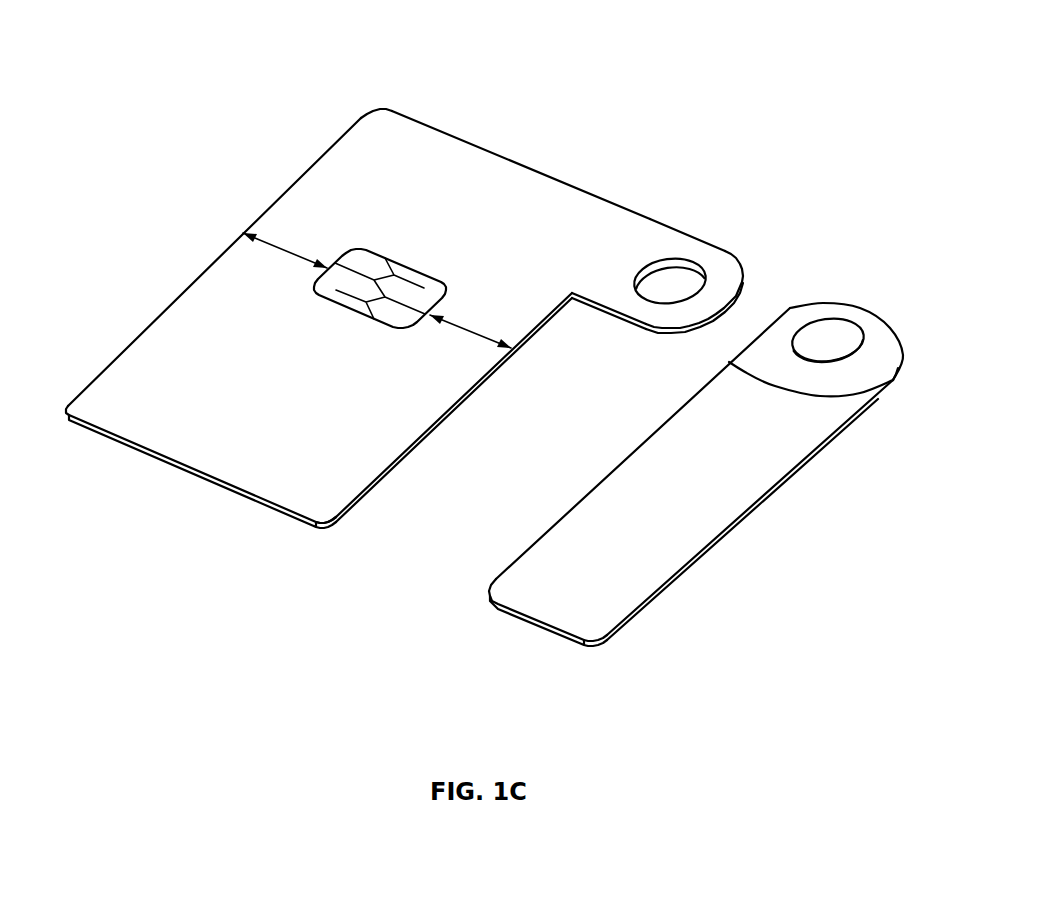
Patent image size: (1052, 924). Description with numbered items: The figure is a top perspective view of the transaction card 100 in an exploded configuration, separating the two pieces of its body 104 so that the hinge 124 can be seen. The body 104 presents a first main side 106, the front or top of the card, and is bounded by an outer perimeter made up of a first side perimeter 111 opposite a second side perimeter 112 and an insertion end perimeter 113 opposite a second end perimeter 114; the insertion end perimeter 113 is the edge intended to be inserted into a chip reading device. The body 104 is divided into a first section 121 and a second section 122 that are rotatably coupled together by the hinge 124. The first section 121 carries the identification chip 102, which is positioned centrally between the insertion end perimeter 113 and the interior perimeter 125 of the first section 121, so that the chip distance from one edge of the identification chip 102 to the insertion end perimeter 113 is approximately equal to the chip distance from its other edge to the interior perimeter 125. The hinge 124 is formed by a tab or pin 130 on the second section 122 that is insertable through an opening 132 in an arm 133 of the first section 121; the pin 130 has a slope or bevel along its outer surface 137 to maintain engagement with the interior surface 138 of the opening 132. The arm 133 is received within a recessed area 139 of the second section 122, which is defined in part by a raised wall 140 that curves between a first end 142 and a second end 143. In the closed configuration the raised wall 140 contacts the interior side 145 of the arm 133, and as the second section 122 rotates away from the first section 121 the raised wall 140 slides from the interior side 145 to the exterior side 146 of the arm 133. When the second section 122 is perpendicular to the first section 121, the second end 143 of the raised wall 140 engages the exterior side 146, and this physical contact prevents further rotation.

The transaction card 100 is at (808, 43).
The identification chip 102 is at (382, 270).
The body 104 is at (558, 686).
The first main side 106 is at (394, 113).
The first side perimeter 111 is at (527, 165).
The second side perimeter 112 is at (193, 478).
The insertion end perimeter 113 is at (193, 277).
The second end perimeter 114 is at (773, 490).
The first section 121 is at (271, 490).
The second section 122 is at (612, 625).
The hinge 124 is at (800, 240).
The interior perimeter 125 is at (490, 373).
The pin 130 is at (836, 337).
The opening 132 is at (690, 281).
The arm 133 is at (722, 267).
The outer surface 137 is at (893, 373).
The interior surface 138 is at (665, 262).
The recessed area 139 is at (888, 346).
The raised wall 140 is at (842, 392).
The first end 142 is at (710, 377).
The second end 143 is at (872, 400).
The interior side 145 is at (630, 322).
The exterior side 146 is at (670, 226).